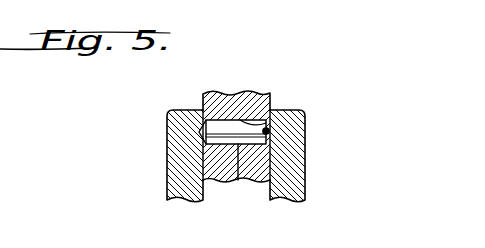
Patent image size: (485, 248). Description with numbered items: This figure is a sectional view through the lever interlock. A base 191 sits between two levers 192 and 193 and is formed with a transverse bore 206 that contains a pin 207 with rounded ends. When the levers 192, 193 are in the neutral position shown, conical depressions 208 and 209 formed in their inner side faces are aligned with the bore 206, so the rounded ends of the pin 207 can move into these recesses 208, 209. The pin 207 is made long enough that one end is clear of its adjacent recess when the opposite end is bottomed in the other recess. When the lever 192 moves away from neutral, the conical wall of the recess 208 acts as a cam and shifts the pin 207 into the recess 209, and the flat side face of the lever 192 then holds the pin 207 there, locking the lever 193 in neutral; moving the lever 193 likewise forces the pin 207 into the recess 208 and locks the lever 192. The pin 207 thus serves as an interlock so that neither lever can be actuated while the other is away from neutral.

The base 191 is at (217, 94).
The lever 192 is at (178, 180).
The lever 193 is at (305, 172).
The transverse bore 206 is at (268, 128).
The pin 207 is at (238, 181).
The conical depression 208 is at (199, 132).
The conical depression 209 is at (305, 136).